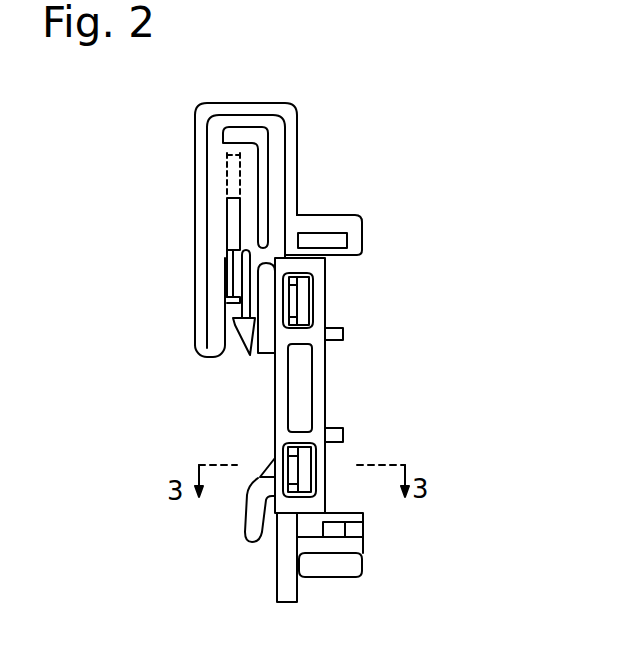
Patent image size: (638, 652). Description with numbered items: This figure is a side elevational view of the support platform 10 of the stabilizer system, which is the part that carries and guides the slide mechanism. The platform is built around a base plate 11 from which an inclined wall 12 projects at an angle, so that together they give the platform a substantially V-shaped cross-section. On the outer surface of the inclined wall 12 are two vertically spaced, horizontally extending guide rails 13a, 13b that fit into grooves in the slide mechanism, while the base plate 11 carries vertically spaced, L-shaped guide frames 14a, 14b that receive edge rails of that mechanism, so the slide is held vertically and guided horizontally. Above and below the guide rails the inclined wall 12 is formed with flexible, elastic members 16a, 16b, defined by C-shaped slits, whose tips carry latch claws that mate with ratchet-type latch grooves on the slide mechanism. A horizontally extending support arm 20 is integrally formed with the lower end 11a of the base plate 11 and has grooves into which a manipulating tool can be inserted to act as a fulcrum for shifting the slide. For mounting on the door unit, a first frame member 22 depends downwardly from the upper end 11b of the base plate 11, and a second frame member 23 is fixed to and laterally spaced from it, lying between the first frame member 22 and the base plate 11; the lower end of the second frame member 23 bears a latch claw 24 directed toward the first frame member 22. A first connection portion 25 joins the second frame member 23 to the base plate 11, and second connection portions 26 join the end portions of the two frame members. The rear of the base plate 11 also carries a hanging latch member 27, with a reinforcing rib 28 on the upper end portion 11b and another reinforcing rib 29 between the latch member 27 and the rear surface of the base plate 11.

The support platform 10 is at (388, 163).
The base plate 11 is at (273, 383).
The lower end of the base plate 11a is at (285, 582).
The upper end of the base plate 11b is at (277, 160).
The inclined wall 12 is at (320, 402).
The guide rail 13a is at (343, 335).
The guide rail 13b is at (343, 437).
The guide frame 14a is at (365, 242).
The guide frame 14b is at (363, 540).
The elastic member 16a is at (290, 297).
The elastic member 16b is at (295, 467).
The support arm 20 is at (340, 566).
The first frame member 22 is at (220, 305).
The second frame member 23 is at (246, 232).
The latch claw 24 is at (237, 330).
The first connection portion 25 is at (250, 260).
The second connection portion 26 is at (233, 213).
The hanging latch member 27 is at (255, 502).
The reinforcing rib 28 is at (198, 141).
The reinforcing rib 29 is at (265, 462).